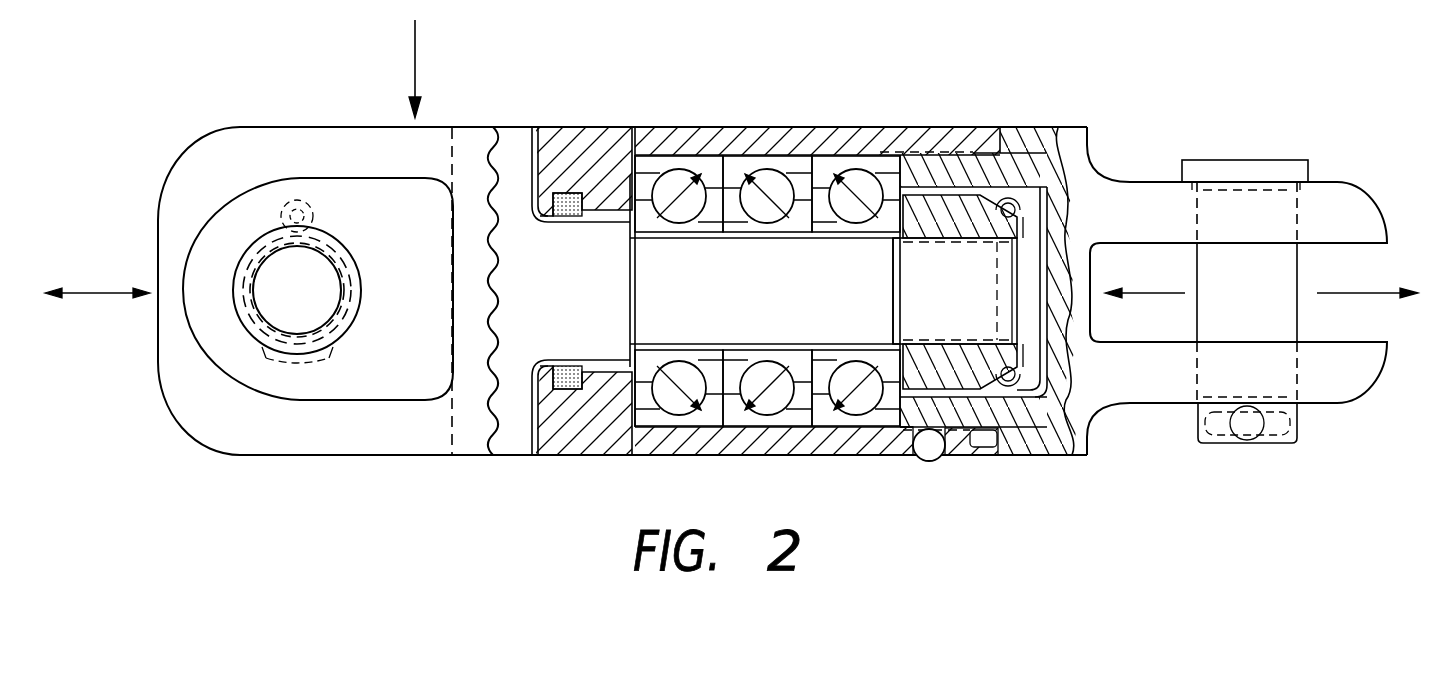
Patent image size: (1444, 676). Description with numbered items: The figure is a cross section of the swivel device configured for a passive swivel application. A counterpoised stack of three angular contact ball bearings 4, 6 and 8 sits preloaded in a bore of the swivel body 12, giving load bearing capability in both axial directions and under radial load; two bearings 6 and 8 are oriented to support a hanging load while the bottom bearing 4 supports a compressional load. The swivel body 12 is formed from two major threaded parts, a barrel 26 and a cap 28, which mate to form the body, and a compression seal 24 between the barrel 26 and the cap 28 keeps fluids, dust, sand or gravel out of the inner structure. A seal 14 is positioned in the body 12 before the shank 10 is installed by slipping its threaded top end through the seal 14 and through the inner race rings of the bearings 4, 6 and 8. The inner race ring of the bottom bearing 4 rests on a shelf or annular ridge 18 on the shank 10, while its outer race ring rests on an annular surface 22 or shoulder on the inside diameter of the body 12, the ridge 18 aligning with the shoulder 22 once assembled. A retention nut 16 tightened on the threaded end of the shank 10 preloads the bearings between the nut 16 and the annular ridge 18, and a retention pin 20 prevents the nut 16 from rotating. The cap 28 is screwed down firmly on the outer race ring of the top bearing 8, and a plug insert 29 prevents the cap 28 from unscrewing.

The angular contact ball bearing 4 is at (683, 165).
The angular contact ball bearing 6 is at (777, 160).
The angular contact ball bearing 8 is at (866, 165).
The shank 10 is at (437, 128).
The swivel body 12 is at (940, 128).
The seal 14 is at (567, 193).
The retention nut 16 is at (972, 190).
The annular ridge 18 is at (640, 357).
The retention pin 20 is at (1023, 195).
The annular surface 22 is at (640, 150).
The compression seal 24 is at (998, 455).
The barrel 26 is at (905, 455).
The cap 28 is at (1080, 458).
The plug insert 29 is at (932, 463).